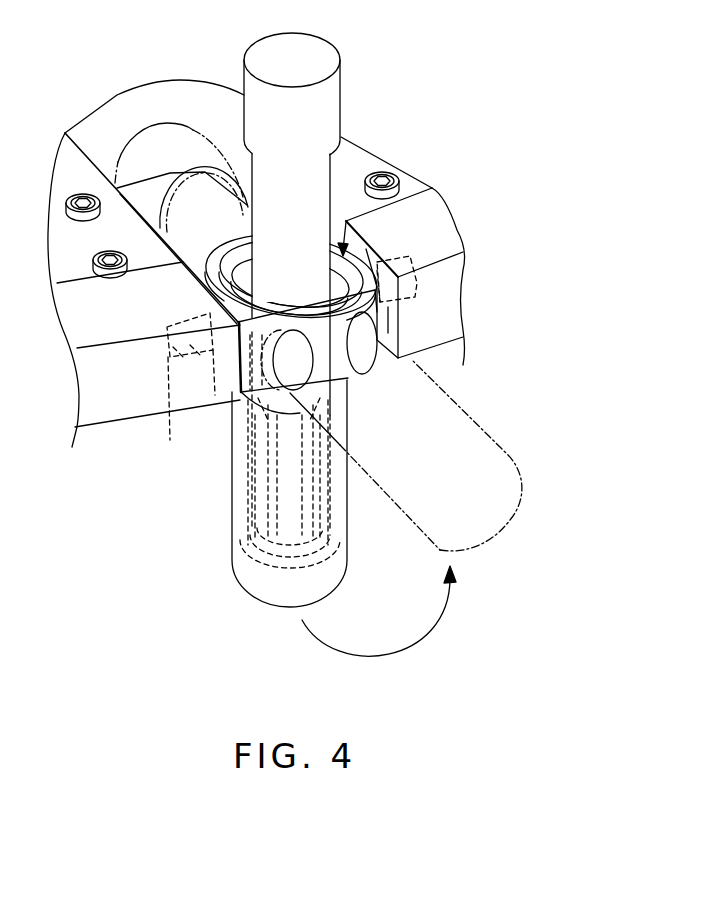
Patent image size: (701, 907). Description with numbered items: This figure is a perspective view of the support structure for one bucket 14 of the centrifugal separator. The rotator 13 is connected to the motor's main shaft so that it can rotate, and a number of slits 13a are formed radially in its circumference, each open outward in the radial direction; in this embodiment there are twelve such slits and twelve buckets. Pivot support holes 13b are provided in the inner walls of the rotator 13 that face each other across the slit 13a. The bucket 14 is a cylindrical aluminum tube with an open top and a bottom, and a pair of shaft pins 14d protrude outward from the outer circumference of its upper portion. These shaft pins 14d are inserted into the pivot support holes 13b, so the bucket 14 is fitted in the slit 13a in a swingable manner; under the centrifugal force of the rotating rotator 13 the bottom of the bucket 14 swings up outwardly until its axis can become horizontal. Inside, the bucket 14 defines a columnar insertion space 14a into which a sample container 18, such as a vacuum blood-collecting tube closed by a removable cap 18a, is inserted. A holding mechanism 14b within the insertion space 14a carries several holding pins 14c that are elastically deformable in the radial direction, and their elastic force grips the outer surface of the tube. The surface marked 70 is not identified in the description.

The rotator 13 is at (110, 424).
The slit 13a is at (214, 116).
The pivot support hole 13b is at (417, 293).
The bucket 14 is at (232, 560).
The insertion space 14a is at (456, 224).
The holding mechanism 14b is at (287, 563).
The holding pin 14c is at (262, 496).
The shaft pin 14d is at (383, 258).
The sample container 18 is at (324, 180).
The cap 18a is at (167, 133).
The mounting surface 70 is at (180, 268).